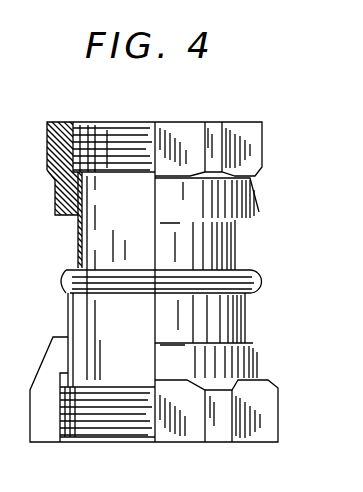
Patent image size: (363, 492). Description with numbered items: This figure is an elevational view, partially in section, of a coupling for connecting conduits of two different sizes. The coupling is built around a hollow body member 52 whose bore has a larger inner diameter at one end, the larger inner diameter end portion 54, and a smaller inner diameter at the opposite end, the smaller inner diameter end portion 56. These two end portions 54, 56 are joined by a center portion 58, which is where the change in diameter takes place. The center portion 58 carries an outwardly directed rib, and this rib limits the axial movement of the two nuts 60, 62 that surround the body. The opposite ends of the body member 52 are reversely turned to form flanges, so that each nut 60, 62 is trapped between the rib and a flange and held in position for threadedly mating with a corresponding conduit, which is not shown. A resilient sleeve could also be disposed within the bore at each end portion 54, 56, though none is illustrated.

The hollow body member 52 is at (228, 247).
The larger inner diameter end portion 54 is at (240, 312).
The smaller inner diameter end portion 56 is at (78, 236).
The center portion 58 is at (60, 276).
The nut 60 is at (268, 418).
The nut 62 is at (258, 152).